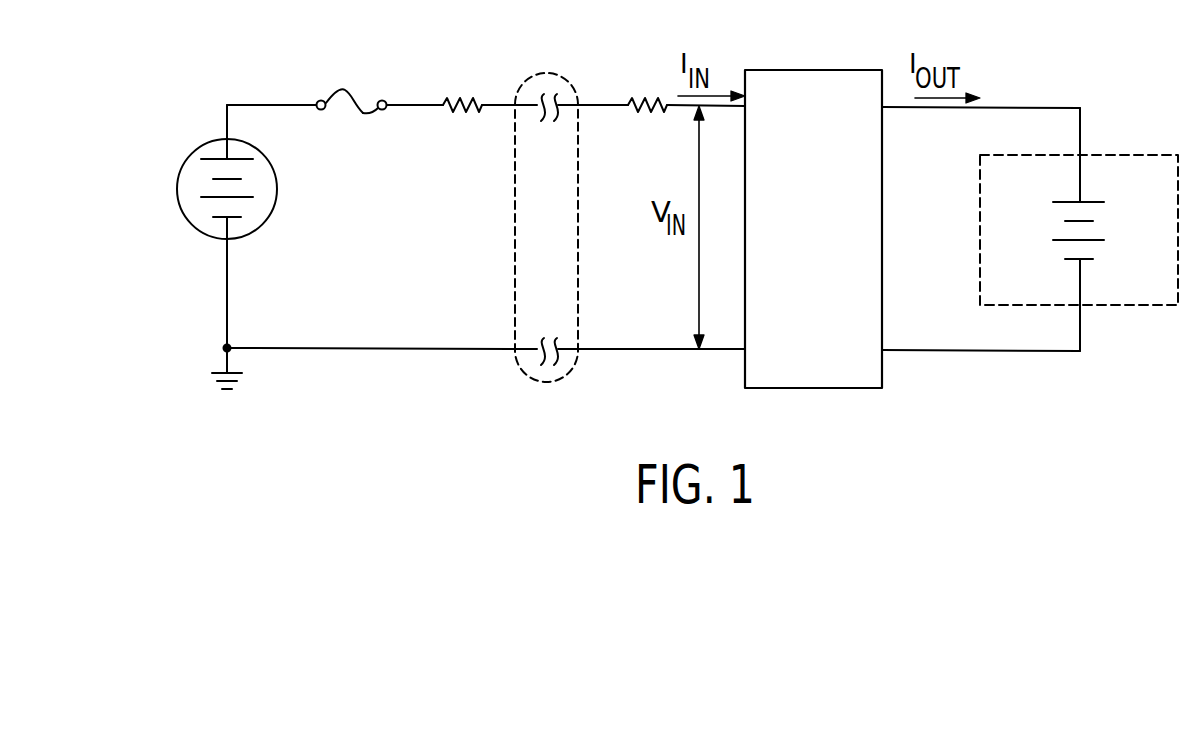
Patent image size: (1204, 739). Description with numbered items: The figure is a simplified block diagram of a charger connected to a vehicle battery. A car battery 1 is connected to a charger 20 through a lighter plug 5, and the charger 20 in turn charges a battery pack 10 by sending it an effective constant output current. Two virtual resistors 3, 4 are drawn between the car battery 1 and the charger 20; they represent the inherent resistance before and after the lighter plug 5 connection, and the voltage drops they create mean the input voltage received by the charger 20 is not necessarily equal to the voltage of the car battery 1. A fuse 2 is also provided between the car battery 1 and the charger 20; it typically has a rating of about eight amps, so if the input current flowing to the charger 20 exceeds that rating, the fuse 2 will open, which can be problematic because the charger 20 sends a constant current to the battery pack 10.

The car battery 1 is at (168, 190).
The fuse 2 is at (363, 113).
The virtual resistor 3 is at (456, 97).
The virtual resistor 4 is at (641, 97).
The lighter plug 5 is at (555, 73).
The battery pack 10 is at (1153, 332).
The charger 20 is at (800, 69).